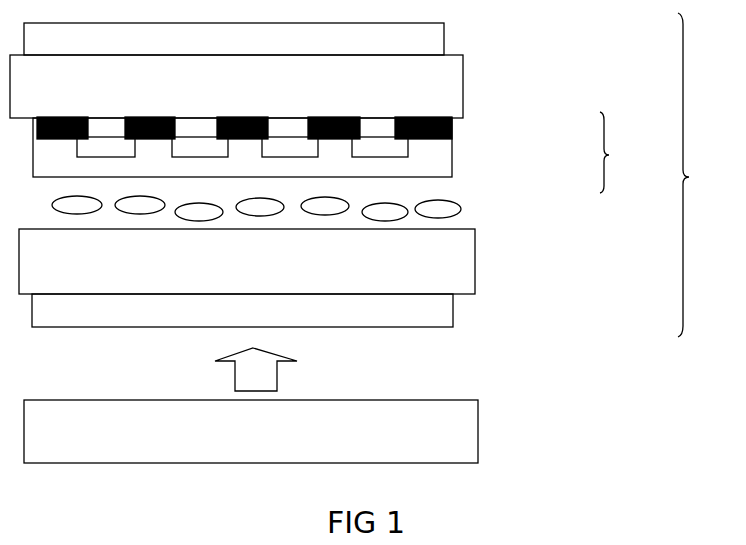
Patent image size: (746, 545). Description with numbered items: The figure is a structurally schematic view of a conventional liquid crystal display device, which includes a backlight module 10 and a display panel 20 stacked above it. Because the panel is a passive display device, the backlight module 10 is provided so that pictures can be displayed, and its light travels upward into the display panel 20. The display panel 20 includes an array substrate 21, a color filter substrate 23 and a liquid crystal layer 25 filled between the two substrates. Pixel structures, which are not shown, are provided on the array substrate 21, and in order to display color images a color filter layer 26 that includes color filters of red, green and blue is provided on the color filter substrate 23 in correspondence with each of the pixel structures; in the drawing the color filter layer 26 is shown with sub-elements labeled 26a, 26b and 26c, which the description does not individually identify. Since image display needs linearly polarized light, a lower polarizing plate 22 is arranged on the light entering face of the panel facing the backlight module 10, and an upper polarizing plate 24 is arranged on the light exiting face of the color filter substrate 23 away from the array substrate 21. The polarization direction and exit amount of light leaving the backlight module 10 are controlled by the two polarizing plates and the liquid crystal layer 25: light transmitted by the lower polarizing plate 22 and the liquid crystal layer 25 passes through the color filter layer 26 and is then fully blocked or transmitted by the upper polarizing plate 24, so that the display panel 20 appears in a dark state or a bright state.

The backlight module 10 is at (478, 418).
The display panel 20 is at (703, 175).
The array substrate 21 is at (475, 258).
The lower polarizing plate 22 is at (453, 310).
The color filter substrate 23 is at (463, 72).
The upper polarizing plate 24 is at (444, 27).
The liquid crystal layer 25 is at (465, 211).
The color filter layer 26 is at (625, 152).
The color filter 26a is at (383, 156).
The black matrix 26b is at (452, 128).
The overcoat layer 26c is at (420, 157).